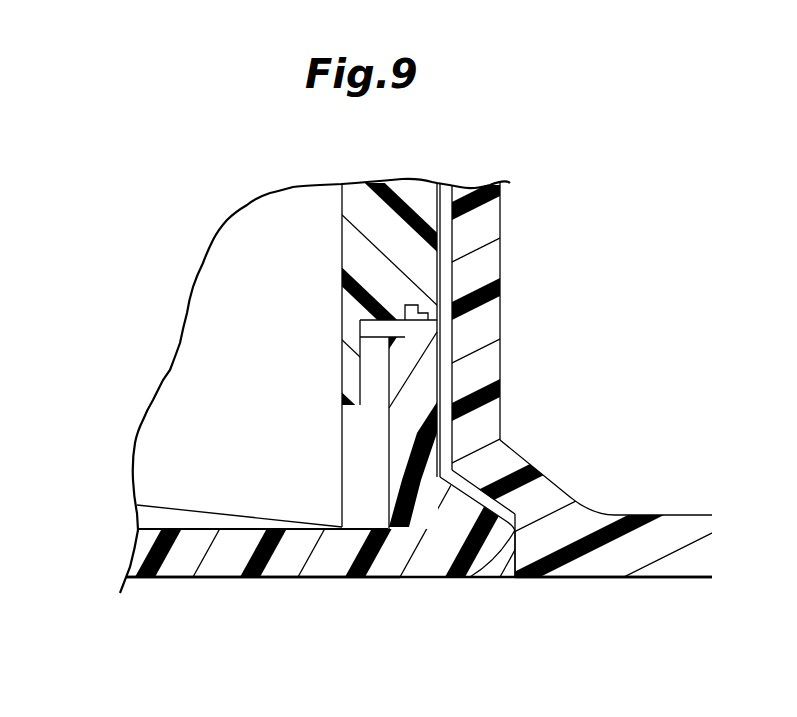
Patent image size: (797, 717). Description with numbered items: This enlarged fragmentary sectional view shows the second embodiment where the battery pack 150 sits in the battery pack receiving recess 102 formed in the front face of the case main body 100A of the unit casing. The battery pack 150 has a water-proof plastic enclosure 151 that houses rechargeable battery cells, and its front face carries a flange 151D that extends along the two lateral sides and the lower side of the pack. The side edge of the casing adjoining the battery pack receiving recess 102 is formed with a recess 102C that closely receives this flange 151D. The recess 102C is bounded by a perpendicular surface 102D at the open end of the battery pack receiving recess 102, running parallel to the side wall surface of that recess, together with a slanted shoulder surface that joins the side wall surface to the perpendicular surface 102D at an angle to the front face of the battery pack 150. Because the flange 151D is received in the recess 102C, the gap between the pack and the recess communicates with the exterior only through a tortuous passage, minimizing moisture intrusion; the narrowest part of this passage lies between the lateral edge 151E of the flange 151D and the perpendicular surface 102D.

The battery pack receiving recess 102 is at (437, 405).
The perpendicular surface 102D is at (514, 519).
The recess 102C is at (535, 573).
The case main body 100A is at (647, 566).
The battery pack 150 is at (208, 583).
The enclosure 151 is at (327, 560).
The flange 151D is at (507, 560).
The lateral edge 151E is at (522, 530).